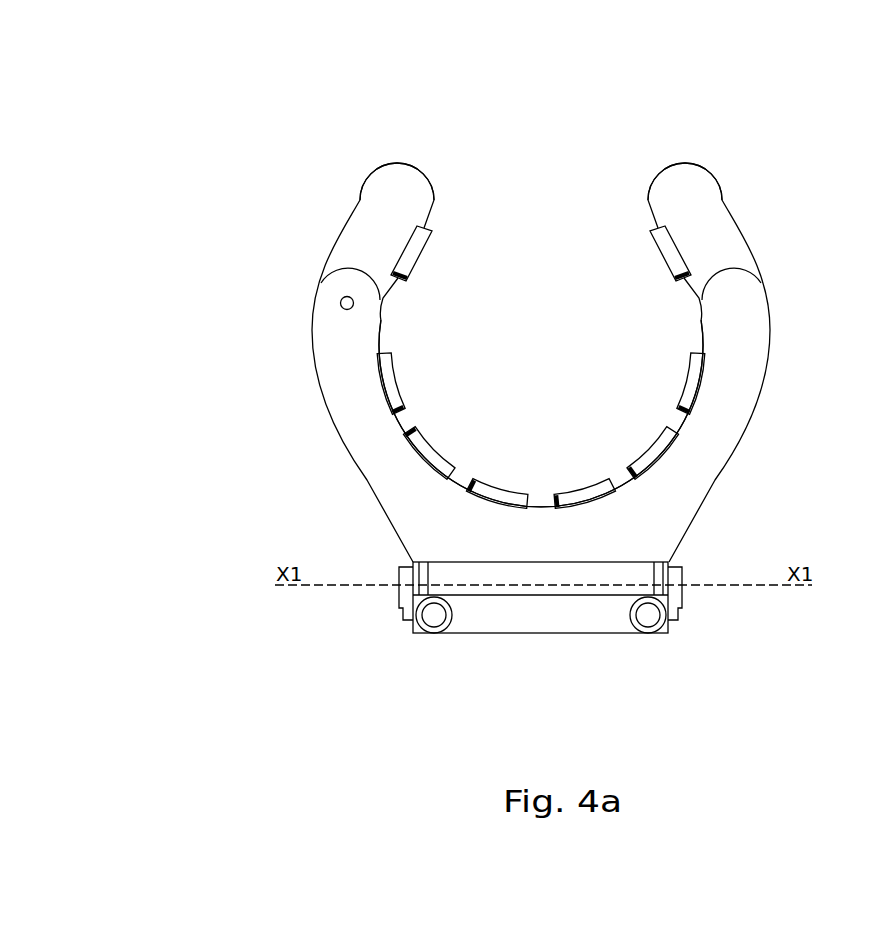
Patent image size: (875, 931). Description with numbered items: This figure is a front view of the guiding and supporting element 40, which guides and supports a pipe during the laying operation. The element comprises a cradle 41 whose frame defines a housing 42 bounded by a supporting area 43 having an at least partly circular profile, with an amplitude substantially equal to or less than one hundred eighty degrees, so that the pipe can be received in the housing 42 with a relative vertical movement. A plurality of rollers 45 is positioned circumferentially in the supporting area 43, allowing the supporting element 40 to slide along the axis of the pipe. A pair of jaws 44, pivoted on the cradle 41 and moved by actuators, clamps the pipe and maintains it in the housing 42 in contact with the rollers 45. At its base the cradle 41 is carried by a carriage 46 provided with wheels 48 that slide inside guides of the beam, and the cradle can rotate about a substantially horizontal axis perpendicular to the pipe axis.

The guiding and supporting element 40 is at (270, 245).
The cradle 41 is at (332, 380).
The housing 42 is at (557, 329).
The supporting area 43 is at (640, 426).
The jaws 44 is at (373, 207).
The rollers 45 is at (497, 487).
The carriage 46 is at (477, 618).
The wheels 48 is at (650, 620).